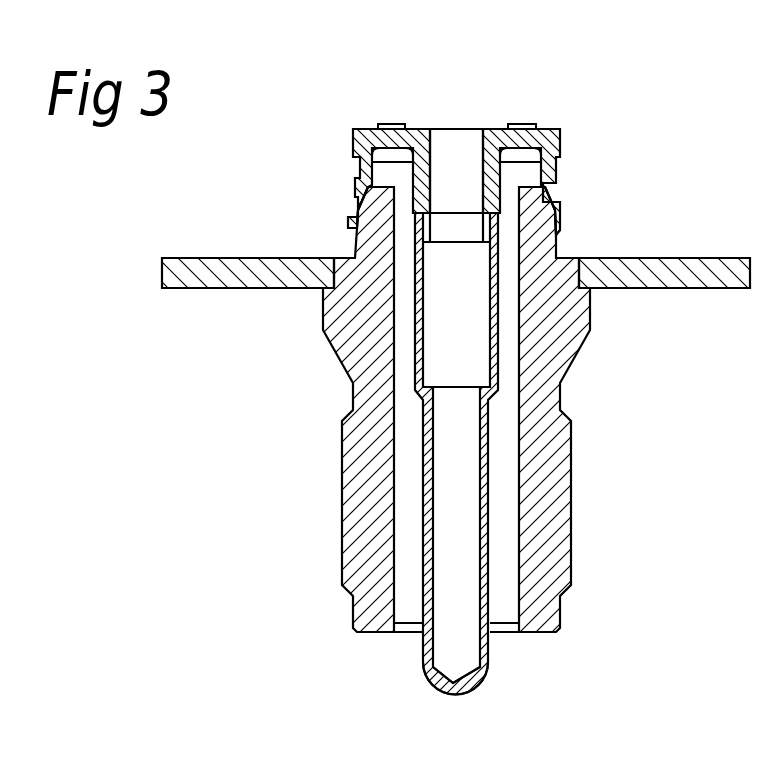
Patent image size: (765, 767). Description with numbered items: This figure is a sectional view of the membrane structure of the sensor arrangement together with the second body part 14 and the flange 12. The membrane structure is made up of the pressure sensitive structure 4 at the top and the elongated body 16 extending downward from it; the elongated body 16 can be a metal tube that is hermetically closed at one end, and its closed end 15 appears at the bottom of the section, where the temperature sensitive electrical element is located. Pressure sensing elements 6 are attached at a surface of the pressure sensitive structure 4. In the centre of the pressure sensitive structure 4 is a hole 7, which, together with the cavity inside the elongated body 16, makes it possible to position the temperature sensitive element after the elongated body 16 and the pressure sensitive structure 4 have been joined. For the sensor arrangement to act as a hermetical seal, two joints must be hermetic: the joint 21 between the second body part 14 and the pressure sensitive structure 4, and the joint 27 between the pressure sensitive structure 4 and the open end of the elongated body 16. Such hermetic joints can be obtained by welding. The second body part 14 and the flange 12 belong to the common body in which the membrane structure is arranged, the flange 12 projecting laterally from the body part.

The pressure sensitive structure 4 is at (560, 135).
The pressure sensing elements 6 is at (393, 123).
The hole 7 is at (457, 120).
The flange 12 is at (219, 272).
The second body part 14 is at (368, 487).
The closed end 15 is at (438, 682).
The elongated body 16 is at (488, 522).
The joint 21 is at (545, 200).
The joint 27 is at (489, 211).